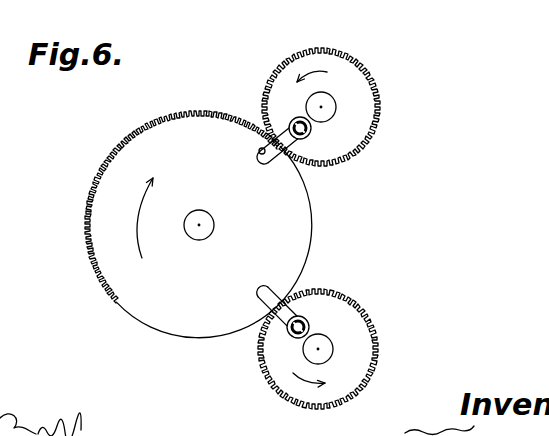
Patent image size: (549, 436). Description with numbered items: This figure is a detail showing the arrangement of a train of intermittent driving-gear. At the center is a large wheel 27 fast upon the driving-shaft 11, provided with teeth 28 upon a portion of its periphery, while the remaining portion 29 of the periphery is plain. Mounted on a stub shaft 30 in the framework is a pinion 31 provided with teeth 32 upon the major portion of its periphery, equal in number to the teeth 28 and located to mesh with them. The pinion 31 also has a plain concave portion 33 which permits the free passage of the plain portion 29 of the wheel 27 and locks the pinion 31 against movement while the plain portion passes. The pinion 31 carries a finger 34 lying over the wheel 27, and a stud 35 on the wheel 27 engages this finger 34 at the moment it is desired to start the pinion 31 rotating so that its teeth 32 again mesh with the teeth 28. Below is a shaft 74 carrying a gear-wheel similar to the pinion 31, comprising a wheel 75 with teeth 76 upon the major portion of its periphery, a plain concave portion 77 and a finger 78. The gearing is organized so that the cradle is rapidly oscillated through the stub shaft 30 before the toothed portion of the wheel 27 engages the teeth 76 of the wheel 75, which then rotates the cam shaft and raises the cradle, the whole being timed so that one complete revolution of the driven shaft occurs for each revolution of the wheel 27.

The main shaft 11 is at (203, 226).
The wheel 27 is at (225, 213).
The teeth 28 is at (167, 116).
The plain portion 29 is at (313, 234).
The stub shaft 30 is at (334, 111).
The pinion 31 is at (349, 86).
The teeth 32 is at (358, 56).
The plain concave portion 33 is at (245, 162).
The finger 34 is at (262, 157).
The stud 35 is at (259, 150).
The shaft 74 is at (317, 352).
The wheel 75 is at (327, 335).
The teeth 76 is at (338, 292).
The plain concave portion 77 is at (290, 307).
The finger 78 is at (267, 300).